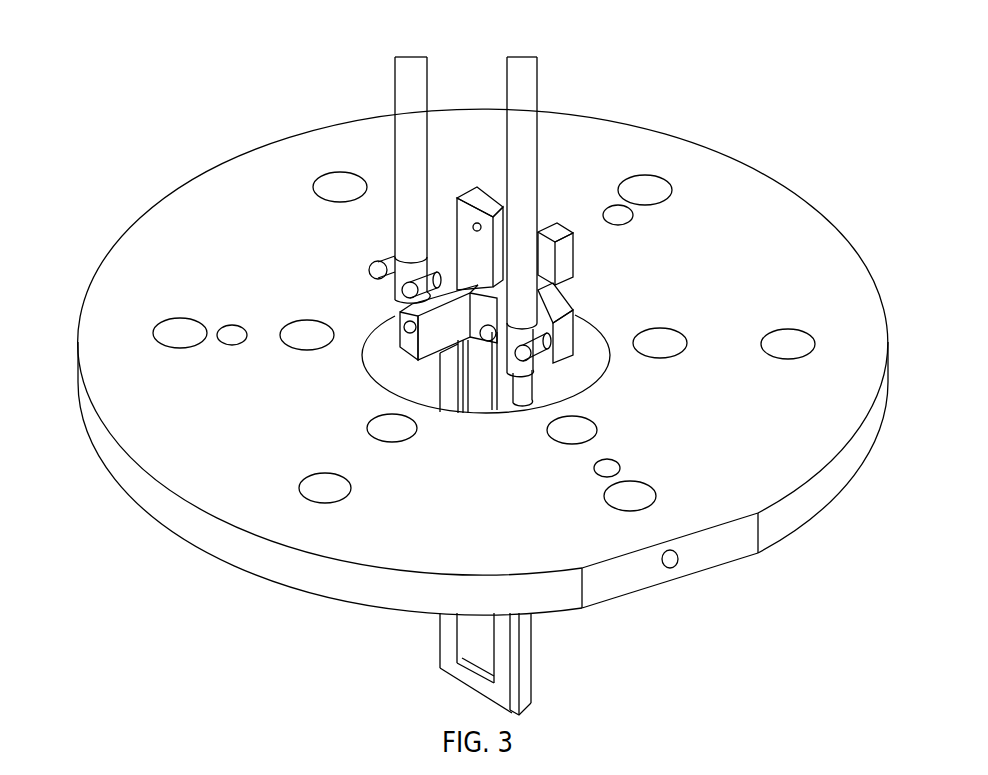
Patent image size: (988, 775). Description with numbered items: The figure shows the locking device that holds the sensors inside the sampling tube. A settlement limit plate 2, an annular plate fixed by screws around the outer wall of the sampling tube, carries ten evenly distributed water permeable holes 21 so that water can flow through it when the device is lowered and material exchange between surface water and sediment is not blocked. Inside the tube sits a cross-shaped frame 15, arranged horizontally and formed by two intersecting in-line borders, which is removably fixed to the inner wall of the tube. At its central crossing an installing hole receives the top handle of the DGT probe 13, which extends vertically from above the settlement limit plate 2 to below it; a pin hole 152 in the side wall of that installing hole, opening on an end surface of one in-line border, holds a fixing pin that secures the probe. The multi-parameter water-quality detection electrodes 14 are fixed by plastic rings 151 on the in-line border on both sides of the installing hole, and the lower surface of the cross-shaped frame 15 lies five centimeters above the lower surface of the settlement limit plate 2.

The settlement limit plate 2 is at (292, 260).
The water permeable hole 21 is at (322, 490).
The DGT probe 13 is at (510, 648).
The multi-parameter water-quality detection electrode 14 is at (520, 223).
The cross-shaped frame 15 is at (540, 317).
The plastic ring 151 is at (540, 297).
The pin hole 152 is at (400, 322).